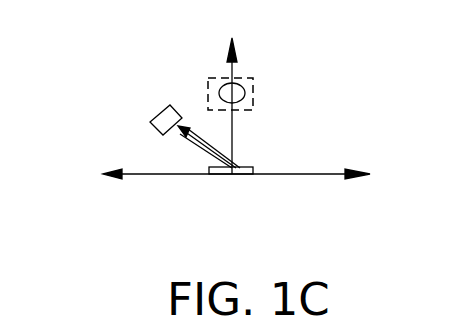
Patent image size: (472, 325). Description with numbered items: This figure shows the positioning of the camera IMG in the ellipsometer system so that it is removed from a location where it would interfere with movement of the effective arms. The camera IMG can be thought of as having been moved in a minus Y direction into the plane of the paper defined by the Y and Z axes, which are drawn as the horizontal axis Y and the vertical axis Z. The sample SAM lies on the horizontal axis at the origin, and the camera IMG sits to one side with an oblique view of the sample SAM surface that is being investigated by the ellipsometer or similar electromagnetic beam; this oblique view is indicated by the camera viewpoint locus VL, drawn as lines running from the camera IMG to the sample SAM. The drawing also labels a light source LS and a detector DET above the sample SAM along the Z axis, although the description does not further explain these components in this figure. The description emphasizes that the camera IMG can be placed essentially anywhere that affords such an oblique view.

The camera IMG is at (158, 100).
The camera viewpoint locus VL is at (190, 149).
The detector DET is at (252, 66).
The light source LS is at (258, 86).
The sample SAM is at (262, 164).
The Z direction Z is at (233, 90).
The Y direction Y is at (236, 191).